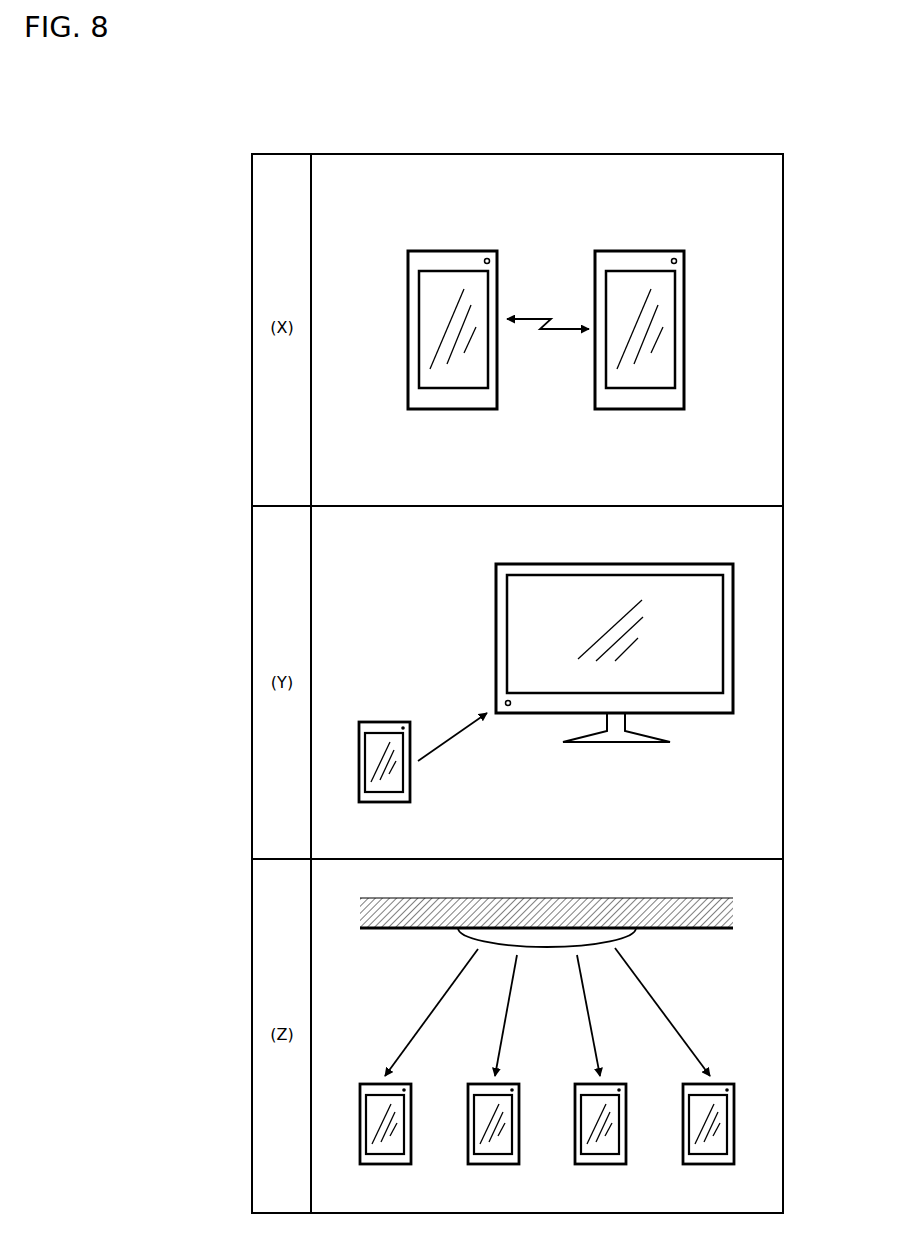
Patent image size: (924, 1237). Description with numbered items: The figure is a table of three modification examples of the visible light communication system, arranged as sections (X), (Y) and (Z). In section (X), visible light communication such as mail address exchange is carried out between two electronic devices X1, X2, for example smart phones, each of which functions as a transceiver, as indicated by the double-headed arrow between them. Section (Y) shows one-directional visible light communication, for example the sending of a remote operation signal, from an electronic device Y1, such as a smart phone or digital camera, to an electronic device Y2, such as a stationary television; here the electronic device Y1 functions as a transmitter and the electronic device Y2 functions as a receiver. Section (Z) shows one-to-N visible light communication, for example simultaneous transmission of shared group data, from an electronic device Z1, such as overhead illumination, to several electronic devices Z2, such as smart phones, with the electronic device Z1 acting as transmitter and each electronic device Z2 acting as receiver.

The electronic device X1 is at (454, 251).
The electronic device X2 is at (641, 251).
The electronic device Y1 is at (386, 722).
The electronic device Y2 is at (616, 564).
The electronic device Z1 is at (549, 948).
The electronic device Z2 is at (385, 1164).